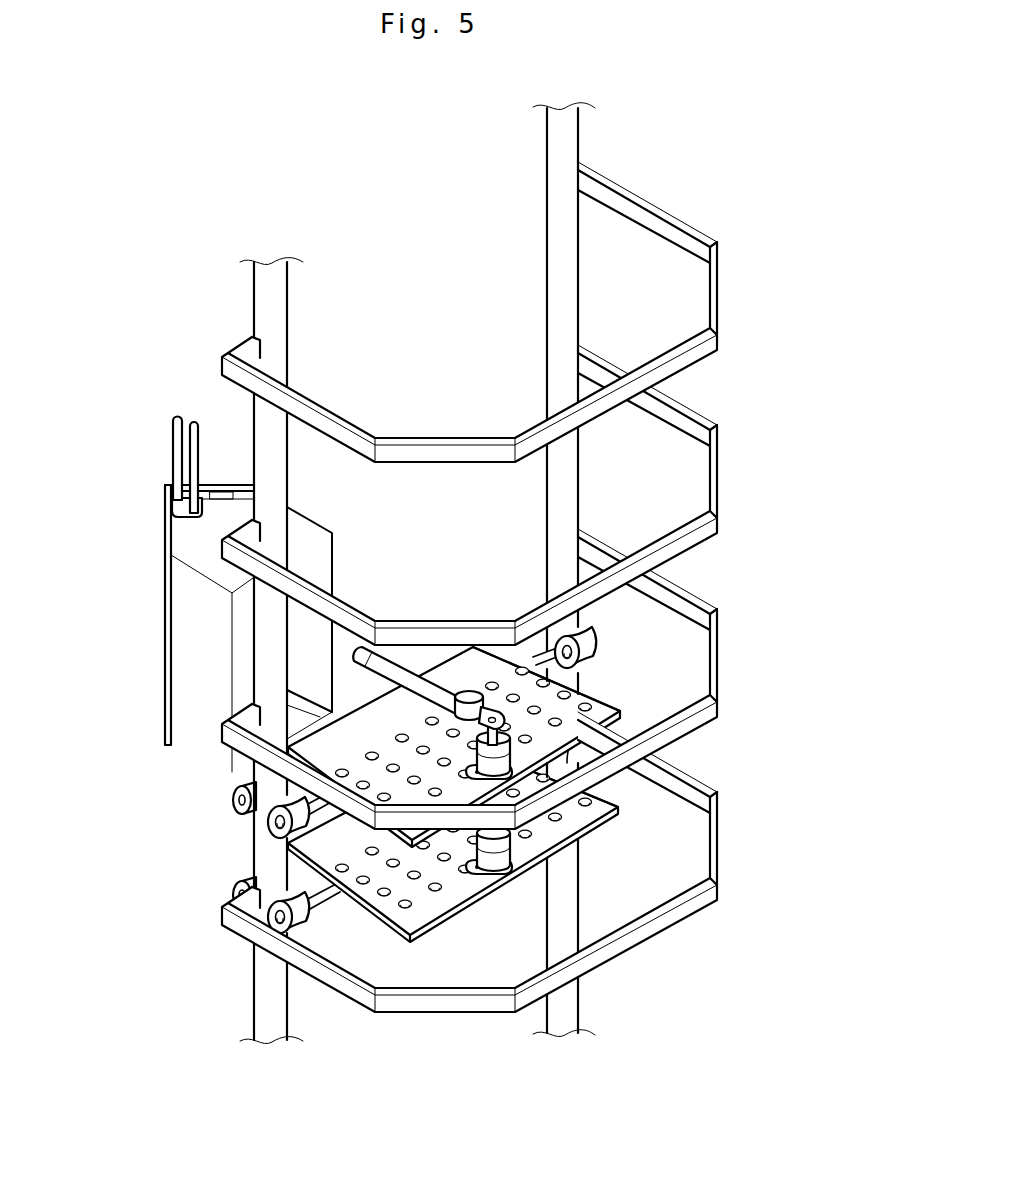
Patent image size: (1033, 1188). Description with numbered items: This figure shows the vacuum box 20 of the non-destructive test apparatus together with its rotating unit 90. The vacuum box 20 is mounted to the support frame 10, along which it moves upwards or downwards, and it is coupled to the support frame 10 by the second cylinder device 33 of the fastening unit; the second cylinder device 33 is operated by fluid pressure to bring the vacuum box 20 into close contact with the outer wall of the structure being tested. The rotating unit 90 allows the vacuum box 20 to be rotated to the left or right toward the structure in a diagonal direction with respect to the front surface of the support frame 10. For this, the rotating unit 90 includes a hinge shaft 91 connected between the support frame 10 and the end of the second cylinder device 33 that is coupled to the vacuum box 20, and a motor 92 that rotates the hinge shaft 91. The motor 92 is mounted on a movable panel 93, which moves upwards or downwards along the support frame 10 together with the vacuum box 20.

The support frame 10 is at (684, 380).
The vacuum box 20 is at (192, 660).
The second cylinder device 33 is at (327, 630).
The rotating unit 90 is at (491, 786).
The hinge shaft 91 is at (480, 795).
The motor 92 is at (510, 752).
The movable panel 93 is at (503, 718).